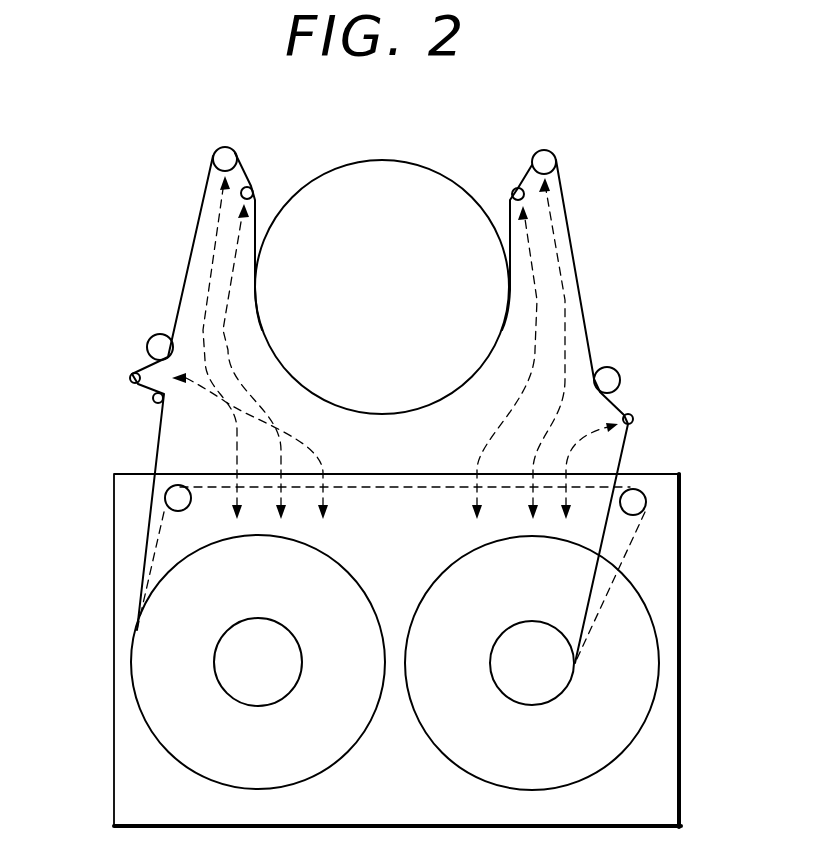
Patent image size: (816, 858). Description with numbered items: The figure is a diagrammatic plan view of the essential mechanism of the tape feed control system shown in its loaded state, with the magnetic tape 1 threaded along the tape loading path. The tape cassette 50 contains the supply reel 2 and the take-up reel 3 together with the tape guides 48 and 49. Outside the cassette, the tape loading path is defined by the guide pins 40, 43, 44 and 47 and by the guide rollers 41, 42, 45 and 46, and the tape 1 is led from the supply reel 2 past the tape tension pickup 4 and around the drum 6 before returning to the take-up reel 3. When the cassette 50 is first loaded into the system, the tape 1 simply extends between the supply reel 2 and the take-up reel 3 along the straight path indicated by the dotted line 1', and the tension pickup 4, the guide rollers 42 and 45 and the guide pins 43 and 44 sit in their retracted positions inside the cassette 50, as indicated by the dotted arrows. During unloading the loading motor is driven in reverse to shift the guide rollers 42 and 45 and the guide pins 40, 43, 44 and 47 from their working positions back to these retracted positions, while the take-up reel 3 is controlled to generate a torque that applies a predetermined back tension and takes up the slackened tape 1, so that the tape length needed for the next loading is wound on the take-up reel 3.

The magnetic tape 1 is at (380, 408).
The dotted line indicating tape position 1' is at (411, 575).
The supply reel 2 is at (146, 722).
The take-up reel 3 is at (645, 715).
The tape tension pickup 4 is at (129, 378).
The drum 6 is at (398, 161).
The guide pin 40 is at (153, 400).
The guide roller 41 is at (150, 337).
The guide roller 42 is at (215, 152).
The guide pin 43 is at (254, 192).
The guide pin 44 is at (515, 188).
The guide roller 45 is at (554, 153).
The guide roller 46 is at (615, 370).
The guide pin 47 is at (634, 418).
The tape guide 48 is at (165, 492).
The tape guide 49 is at (646, 500).
The tape cassette 50 is at (114, 590).